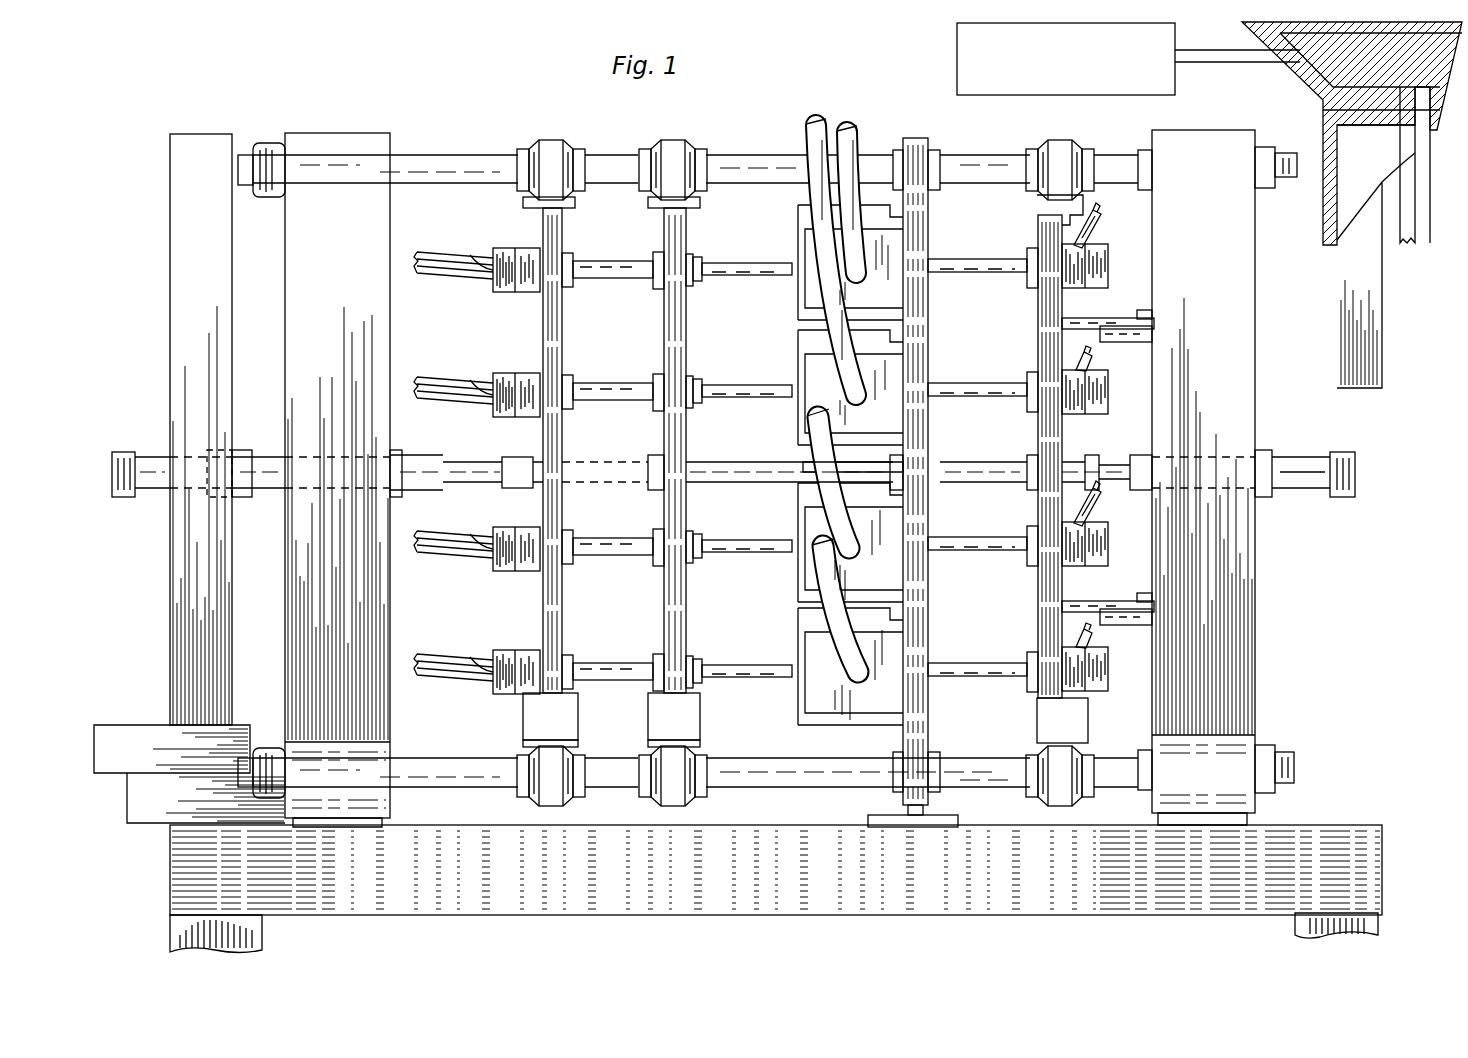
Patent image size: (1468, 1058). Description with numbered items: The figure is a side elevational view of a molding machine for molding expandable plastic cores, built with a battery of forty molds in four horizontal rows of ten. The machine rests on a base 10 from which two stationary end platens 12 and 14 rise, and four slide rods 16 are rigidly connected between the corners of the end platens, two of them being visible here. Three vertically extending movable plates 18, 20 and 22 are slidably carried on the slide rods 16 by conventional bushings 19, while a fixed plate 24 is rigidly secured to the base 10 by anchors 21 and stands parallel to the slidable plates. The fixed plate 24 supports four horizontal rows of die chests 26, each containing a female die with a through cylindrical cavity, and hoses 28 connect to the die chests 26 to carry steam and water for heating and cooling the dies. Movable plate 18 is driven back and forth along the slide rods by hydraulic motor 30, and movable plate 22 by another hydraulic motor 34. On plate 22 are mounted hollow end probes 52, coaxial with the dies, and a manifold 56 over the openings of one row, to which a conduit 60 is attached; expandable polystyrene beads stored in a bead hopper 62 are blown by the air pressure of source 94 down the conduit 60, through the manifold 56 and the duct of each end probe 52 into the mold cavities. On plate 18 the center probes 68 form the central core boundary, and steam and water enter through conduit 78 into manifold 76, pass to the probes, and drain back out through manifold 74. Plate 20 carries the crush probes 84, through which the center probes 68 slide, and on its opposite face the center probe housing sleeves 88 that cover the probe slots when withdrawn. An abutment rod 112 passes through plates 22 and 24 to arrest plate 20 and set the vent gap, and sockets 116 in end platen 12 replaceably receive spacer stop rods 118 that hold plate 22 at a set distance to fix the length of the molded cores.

The base 10 is at (1285, 842).
The end platen 12 is at (1240, 385).
The end platen 14 is at (285, 560).
The slide rod 16 is at (458, 160).
The movable plate 18 is at (556, 325).
The bushing 19 is at (672, 160).
The movable plate 20 is at (664, 428).
The anchor 21 is at (912, 818).
The movable plate 22 is at (1040, 458).
The fixed plate 24 is at (928, 520).
The die chest 26 is at (875, 228).
The hose 28 is at (818, 128).
The hydraulic motor 30 is at (138, 447).
The hydraulic motor 34 is at (1342, 448).
The end probe 52 is at (982, 265).
The manifold 56 is at (1078, 280).
The conduit 60 is at (1092, 230).
The hopper 62 is at (1290, 78).
The center probe 68 is at (758, 265).
The manifold 74 is at (530, 288).
The manifold 76 is at (485, 282).
The conduit 78 is at (432, 268).
The crush probe 84 is at (698, 262).
The center probe housing sleeve 88 is at (622, 268).
The air pressure source 94 is at (1077, 93).
The abutment rod 112 is at (990, 466).
The socket 116 is at (1120, 345).
The spacer stop rod 118 is at (1112, 322).